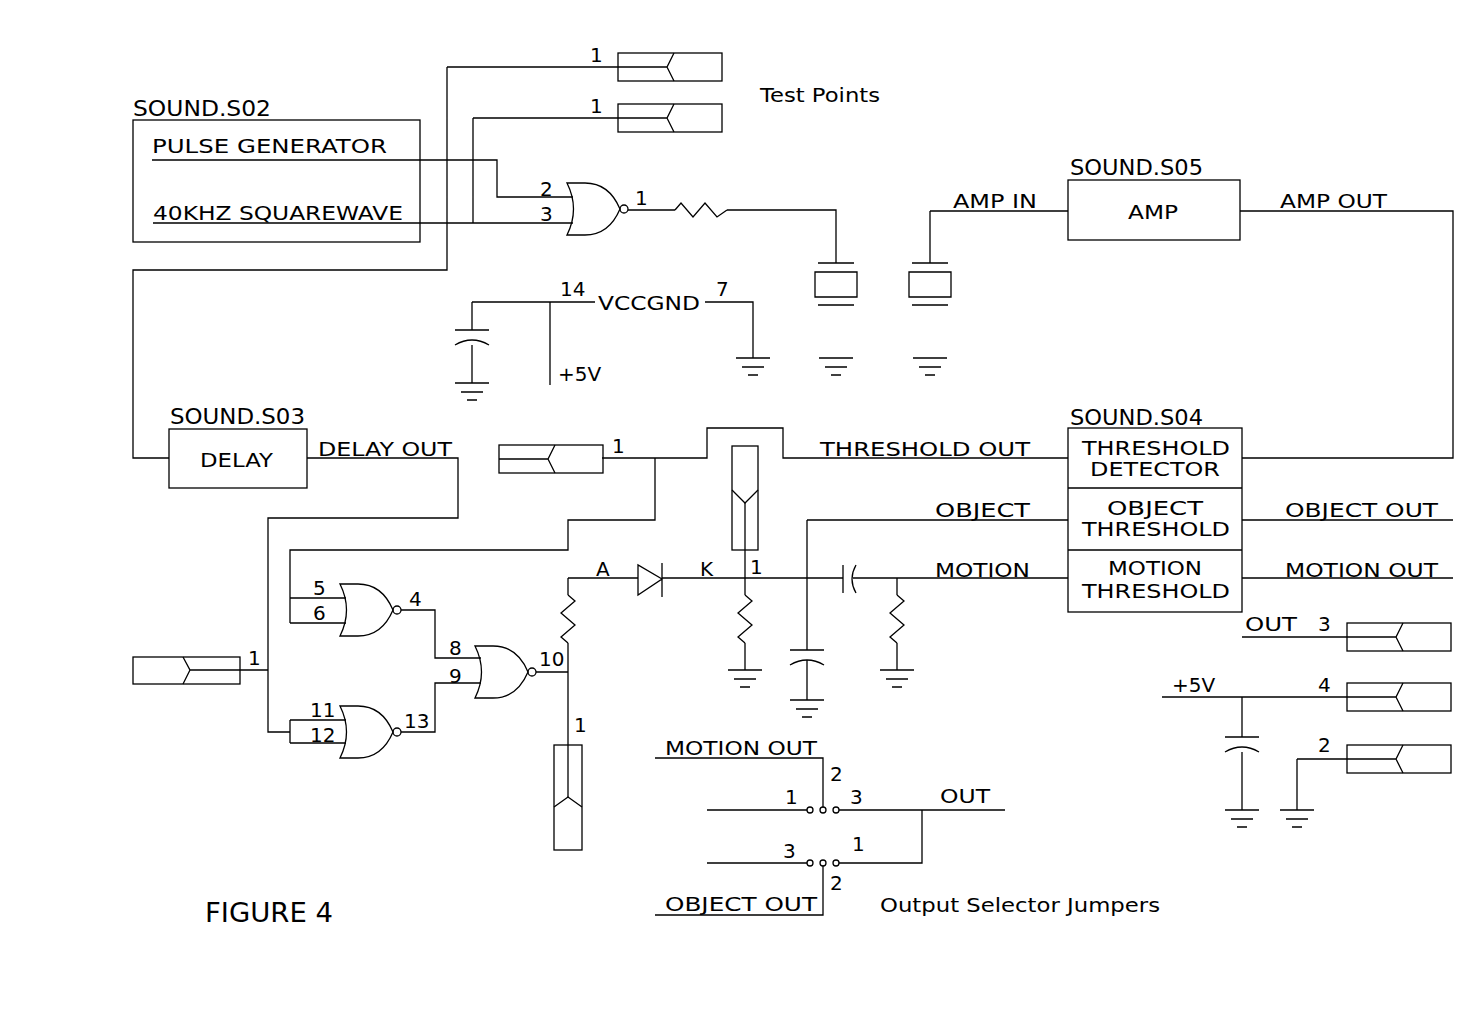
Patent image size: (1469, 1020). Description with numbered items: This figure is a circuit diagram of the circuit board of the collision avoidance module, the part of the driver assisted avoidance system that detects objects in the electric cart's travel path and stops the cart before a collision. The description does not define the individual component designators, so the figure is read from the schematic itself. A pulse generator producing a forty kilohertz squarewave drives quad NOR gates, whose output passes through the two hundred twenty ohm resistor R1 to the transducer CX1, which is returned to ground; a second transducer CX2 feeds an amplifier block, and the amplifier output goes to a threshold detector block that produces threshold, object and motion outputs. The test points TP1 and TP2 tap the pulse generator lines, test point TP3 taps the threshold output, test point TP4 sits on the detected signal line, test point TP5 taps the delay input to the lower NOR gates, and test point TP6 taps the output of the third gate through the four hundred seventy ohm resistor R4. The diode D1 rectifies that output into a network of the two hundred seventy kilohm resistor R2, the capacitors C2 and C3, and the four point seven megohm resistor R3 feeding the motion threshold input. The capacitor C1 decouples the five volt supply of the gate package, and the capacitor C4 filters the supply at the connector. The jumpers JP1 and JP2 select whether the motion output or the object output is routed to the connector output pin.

The test point 1 TP1 is at (670, 55).
The test point 2 TP2 is at (670, 130).
The test point 3 TP3 is at (551, 448).
The test point 4 TP4 is at (718, 498).
The test point 5 TP5 is at (186, 659).
The test point 6 TP6 is at (544, 797).
The resistor 220 ohm R1 is at (701, 212).
The resistor 270k ohm R2 is at (715, 620).
The resistor 4.7M ohm R3 is at (925, 620).
The resistor 470 ohm R4 is at (591, 620).
The capacitor 1uf C1 is at (457, 332).
The capacitor .1uF C2 is at (844, 582).
The capacitor 1uF C3 is at (828, 649).
The capacitor 100uf C4 is at (1214, 736).
The ultrasonic transducer (transmit) CX1 is at (808, 284).
The ultrasonic transducer (receive) CX2 is at (954, 284).
The diode D1 is at (652, 569).
The jumper 1 JP1 is at (854, 825).
The jumper 2 JP2 is at (785, 848).